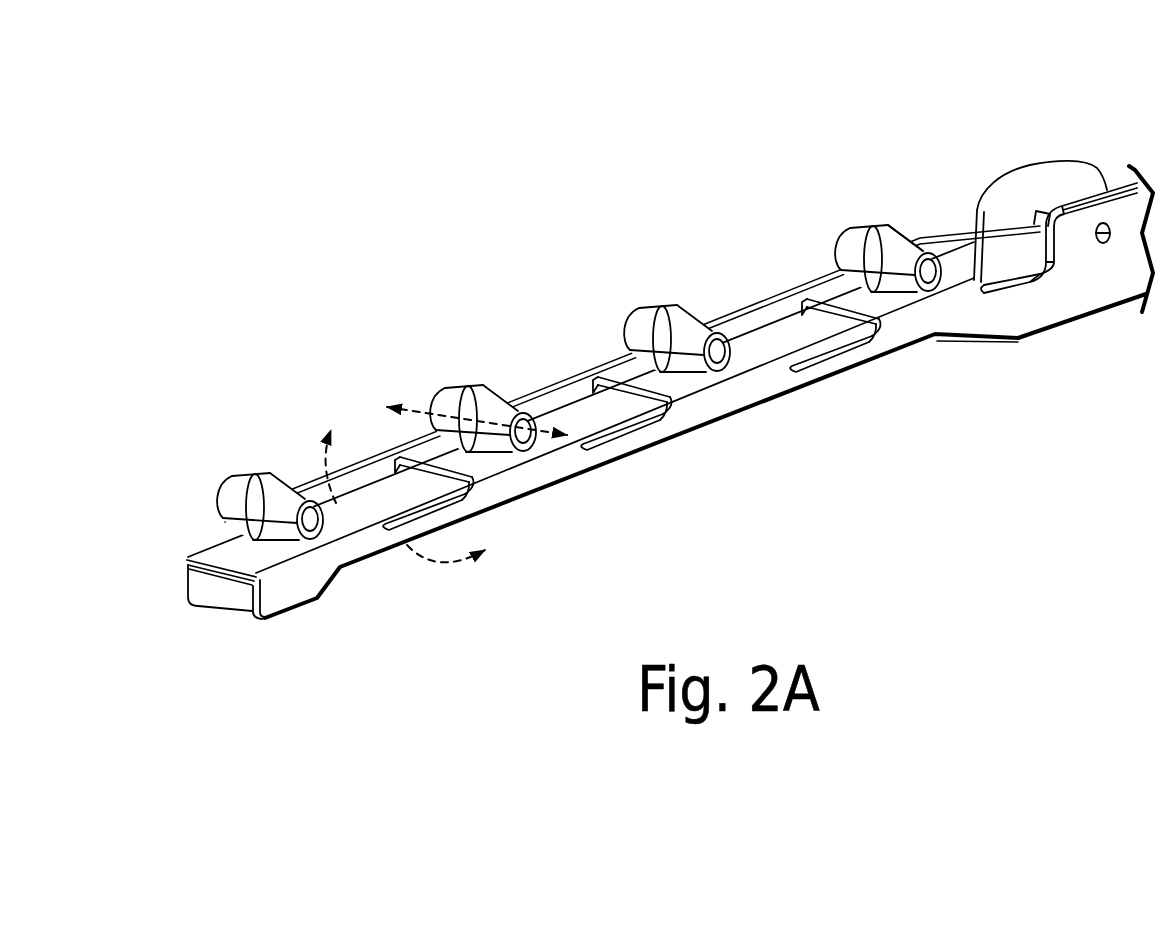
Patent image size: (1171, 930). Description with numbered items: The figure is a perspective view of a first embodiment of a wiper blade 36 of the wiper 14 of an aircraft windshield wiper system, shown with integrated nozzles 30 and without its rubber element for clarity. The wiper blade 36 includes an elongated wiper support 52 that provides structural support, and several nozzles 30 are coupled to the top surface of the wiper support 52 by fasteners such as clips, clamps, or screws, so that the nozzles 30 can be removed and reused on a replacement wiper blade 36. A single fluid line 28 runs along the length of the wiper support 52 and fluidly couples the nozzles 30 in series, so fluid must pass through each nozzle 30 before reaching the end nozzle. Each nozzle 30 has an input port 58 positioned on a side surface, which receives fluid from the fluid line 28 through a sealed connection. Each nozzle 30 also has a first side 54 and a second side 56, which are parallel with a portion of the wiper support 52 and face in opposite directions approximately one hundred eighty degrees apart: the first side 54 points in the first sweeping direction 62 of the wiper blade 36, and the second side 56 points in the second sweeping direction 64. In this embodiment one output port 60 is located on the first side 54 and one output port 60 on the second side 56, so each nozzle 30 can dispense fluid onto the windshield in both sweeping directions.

The wiper 14 is at (433, 217).
The fluid line 28 is at (571, 376).
The nozzle 30 is at (858, 236).
The wiper blade 36 is at (987, 110).
The wiper support 52 is at (1070, 169).
The first side 54 is at (726, 372).
The second side 56 is at (628, 318).
The input port 58 is at (915, 231).
The output port 60 is at (929, 283).
The first sweeping direction 62 is at (456, 566).
The second sweeping direction 64 is at (324, 453).